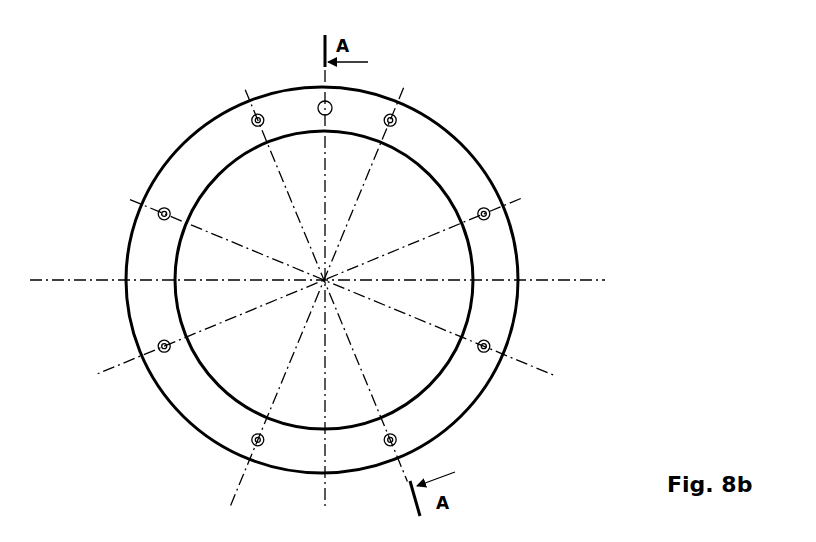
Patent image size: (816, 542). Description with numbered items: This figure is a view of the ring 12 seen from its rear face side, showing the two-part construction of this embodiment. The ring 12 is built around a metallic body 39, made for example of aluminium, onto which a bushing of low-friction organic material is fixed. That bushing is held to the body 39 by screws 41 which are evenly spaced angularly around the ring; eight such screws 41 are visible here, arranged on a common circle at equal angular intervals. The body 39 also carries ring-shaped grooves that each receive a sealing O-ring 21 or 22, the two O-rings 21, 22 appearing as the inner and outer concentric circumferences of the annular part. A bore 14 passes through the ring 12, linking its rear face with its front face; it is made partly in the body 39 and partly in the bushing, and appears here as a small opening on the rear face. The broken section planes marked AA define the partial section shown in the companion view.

The ring 12 is at (136, 124).
The bore 14 is at (318, 103).
The sealing O-ring 21 is at (447, 347).
The sealing O-ring 22 is at (123, 324).
The metallic body 39 is at (451, 150).
The screws 41 is at (489, 207).